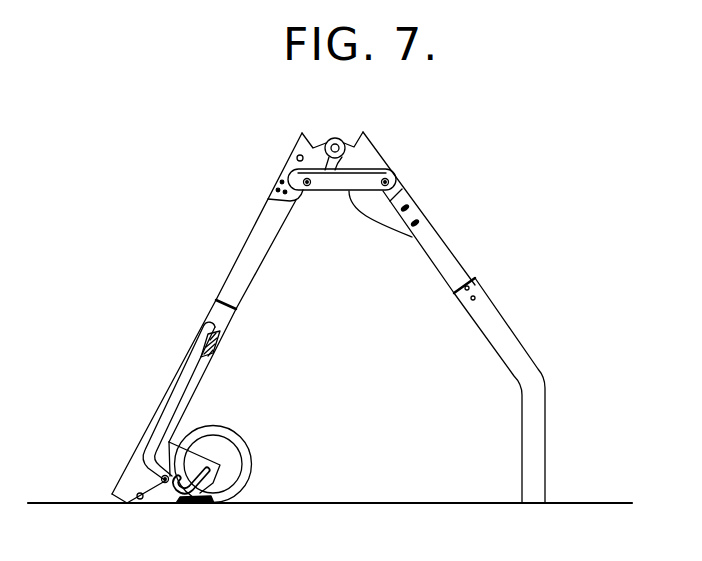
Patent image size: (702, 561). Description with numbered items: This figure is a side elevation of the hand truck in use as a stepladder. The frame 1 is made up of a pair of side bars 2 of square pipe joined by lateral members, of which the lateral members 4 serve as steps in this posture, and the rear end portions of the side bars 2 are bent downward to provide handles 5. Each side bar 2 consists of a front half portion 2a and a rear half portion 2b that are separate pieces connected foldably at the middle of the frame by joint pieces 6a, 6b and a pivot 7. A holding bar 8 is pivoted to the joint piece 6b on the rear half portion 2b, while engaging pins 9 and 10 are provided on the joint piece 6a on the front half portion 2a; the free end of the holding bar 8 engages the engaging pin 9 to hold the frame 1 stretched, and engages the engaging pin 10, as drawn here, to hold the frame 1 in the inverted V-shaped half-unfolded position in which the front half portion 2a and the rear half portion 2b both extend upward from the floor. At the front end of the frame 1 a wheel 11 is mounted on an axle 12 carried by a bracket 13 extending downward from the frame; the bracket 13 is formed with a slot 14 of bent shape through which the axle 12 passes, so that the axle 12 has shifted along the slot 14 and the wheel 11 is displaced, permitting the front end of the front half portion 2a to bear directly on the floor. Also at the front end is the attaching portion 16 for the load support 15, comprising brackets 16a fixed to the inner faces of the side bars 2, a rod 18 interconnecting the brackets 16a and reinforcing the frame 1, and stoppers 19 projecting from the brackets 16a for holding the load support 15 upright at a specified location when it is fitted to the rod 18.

The frame 1 is at (251, 219).
The side bars 2 is at (238, 255).
The front half portion 2a is at (247, 277).
The rear half portion 2b is at (446, 273).
The lateral members 4 is at (221, 334).
The handles 5 is at (545, 457).
The joint piece 6a is at (315, 140).
The joint piece 6b is at (356, 142).
The pivot 7 is at (336, 138).
The holding bar 8 is at (372, 167).
The engaging pin 9 is at (297, 155).
The engaging pin 10 is at (307, 187).
The wheels 11 is at (241, 438).
The axle 12 is at (241, 495).
The brackets 13 is at (170, 495).
The slot 14 is at (208, 497).
The load support 15 is at (188, 358).
The attaching portion 16 is at (143, 452).
The brackets 16a is at (136, 468).
The rod 18 is at (158, 407).
The stoppers 19 is at (140, 503).